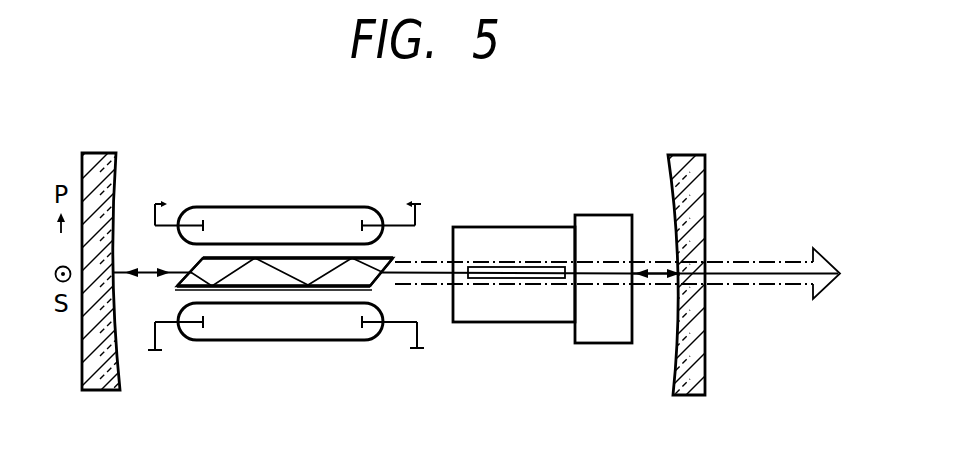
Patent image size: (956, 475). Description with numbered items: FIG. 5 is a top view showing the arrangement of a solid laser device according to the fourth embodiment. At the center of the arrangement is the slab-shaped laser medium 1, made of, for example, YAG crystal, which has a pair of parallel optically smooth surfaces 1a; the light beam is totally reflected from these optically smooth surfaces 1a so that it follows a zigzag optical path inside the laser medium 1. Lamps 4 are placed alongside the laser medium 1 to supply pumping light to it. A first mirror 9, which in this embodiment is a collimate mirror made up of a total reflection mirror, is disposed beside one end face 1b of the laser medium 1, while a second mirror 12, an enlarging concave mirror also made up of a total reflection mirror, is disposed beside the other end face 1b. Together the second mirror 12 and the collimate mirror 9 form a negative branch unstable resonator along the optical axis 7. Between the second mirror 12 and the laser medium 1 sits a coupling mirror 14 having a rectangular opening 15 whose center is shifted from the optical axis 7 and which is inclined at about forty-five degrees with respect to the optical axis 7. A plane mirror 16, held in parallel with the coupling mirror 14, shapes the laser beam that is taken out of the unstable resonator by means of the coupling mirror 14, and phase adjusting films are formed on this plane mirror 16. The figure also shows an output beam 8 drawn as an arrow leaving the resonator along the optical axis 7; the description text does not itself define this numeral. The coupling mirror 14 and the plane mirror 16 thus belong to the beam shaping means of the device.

The slab-shaped laser medium 1 is at (380, 288).
The optically smooth surfaces 1a is at (247, 291).
The end face 1b is at (191, 270).
The lamps 4 is at (328, 207).
The optical axis 7 is at (432, 262).
The output laser beam 8 is at (788, 290).
The first mirror 9 is at (111, 391).
The second mirror 12 is at (706, 387).
The coupling mirror 14 is at (537, 227).
The rectangular opening 15 is at (543, 279).
The plane mirror 16 is at (585, 343).